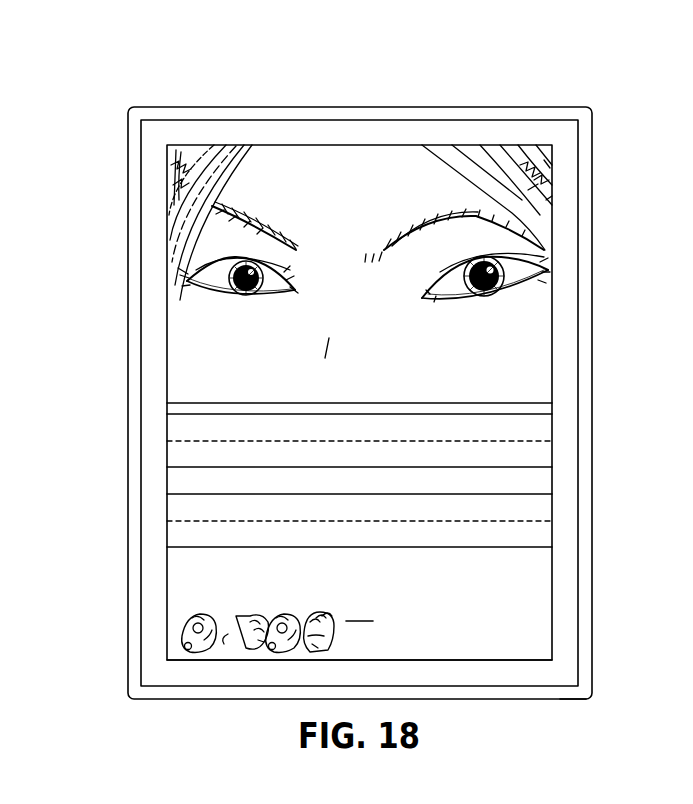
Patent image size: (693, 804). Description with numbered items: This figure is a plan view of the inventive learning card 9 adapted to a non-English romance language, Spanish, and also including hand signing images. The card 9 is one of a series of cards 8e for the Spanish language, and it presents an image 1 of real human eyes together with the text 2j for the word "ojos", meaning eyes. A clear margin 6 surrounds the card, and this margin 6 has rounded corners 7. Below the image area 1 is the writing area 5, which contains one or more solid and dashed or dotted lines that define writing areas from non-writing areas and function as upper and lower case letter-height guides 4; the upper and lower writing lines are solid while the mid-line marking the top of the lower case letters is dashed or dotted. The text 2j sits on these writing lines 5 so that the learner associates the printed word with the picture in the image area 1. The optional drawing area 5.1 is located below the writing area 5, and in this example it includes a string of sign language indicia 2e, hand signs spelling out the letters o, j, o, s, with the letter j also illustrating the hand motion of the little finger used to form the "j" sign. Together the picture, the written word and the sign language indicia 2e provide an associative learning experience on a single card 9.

The learning card 9 is at (152, 102).
The clear margin 6 is at (136, 347).
The rounded corners 7 is at (586, 699).
The image area 1 is at (184, 311).
The writing area 5 is at (176, 510).
The upper and lower case letter-height guides 4 is at (541, 414).
The text 2j is at (195, 452).
The drawing area 5.1 is at (537, 590).
The series of cards 8e is at (360, 609).
The sign language indicia 2e is at (182, 634).